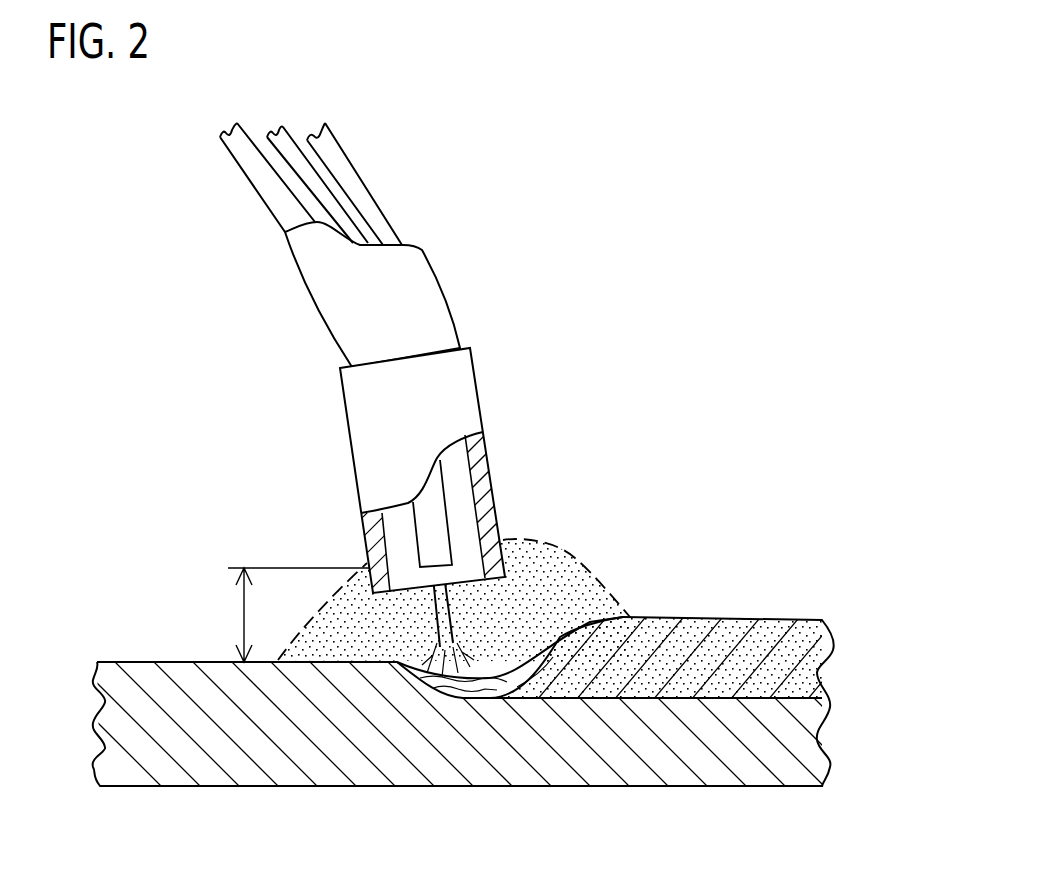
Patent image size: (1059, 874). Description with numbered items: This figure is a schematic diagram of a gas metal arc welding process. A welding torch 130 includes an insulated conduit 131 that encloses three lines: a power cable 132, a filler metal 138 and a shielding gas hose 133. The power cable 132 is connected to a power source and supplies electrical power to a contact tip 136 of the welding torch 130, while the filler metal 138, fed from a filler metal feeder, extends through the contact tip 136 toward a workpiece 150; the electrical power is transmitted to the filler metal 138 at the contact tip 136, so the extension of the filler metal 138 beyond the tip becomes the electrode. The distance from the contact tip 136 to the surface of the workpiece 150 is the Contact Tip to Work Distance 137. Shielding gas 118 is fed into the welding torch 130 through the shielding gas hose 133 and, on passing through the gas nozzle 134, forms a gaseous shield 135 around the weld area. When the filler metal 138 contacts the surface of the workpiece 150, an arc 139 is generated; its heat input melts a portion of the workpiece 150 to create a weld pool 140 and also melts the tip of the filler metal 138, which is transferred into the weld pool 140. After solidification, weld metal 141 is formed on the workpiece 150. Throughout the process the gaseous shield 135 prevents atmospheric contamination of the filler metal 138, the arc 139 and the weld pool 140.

The shielding gas 118 is at (207, 114).
The welding torch 130 is at (553, 222).
The insulated conduit 131 is at (443, 298).
The power cable 132 is at (373, 210).
The shielding gas hose 133 is at (277, 182).
The gas nozzle 134 is at (497, 515).
The gaseous shield 135 is at (540, 540).
The contact tip 136 is at (430, 517).
The Contact Tip to Work Distance 137 is at (243, 615).
The filler metal 138 is at (312, 173).
The arc 139 is at (460, 650).
The weld pool 140 is at (455, 690).
The weld metal 141 is at (747, 638).
The workpiece 150 is at (143, 673).